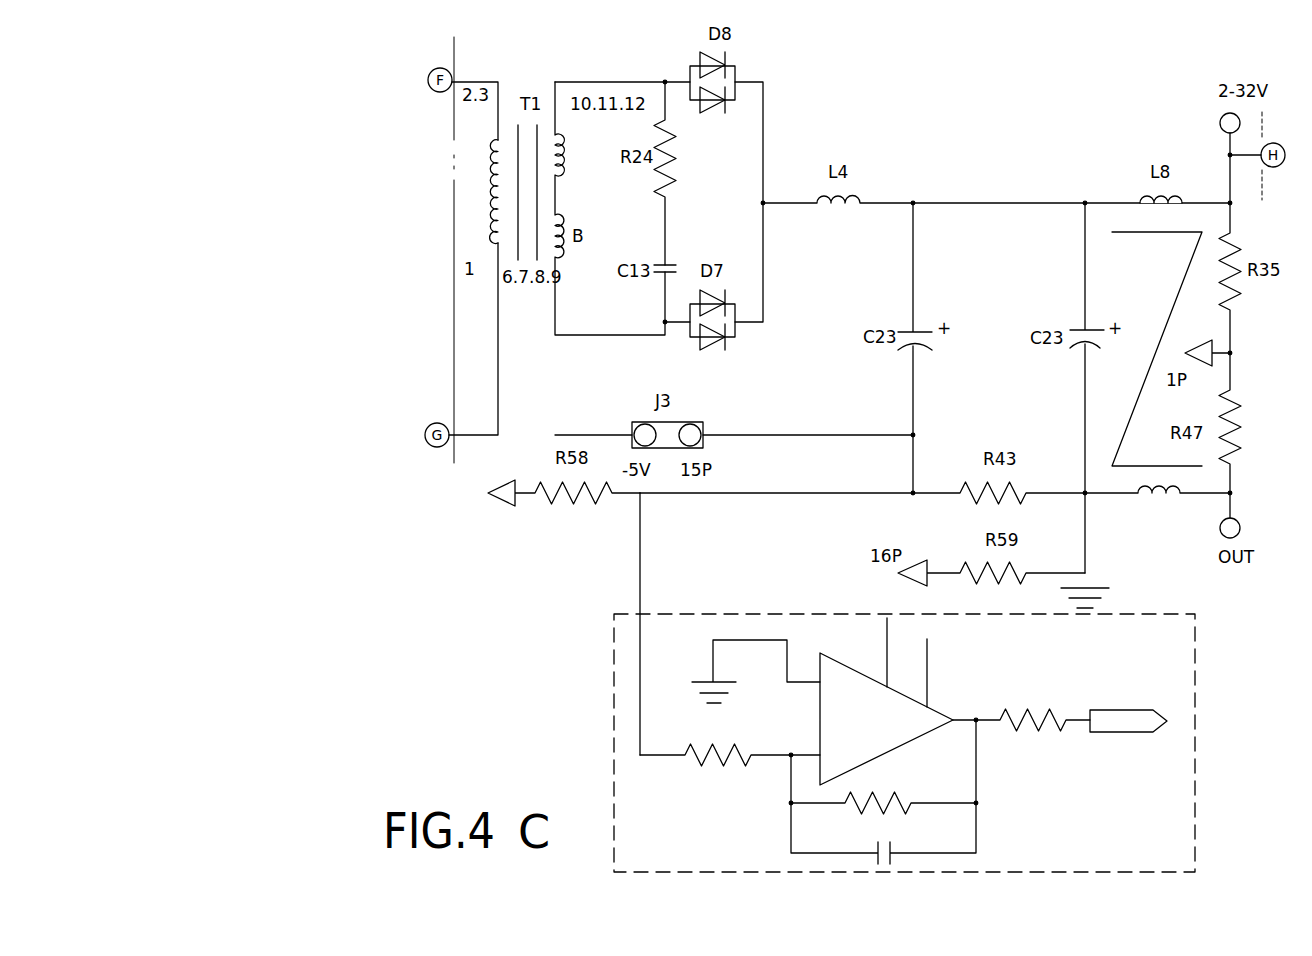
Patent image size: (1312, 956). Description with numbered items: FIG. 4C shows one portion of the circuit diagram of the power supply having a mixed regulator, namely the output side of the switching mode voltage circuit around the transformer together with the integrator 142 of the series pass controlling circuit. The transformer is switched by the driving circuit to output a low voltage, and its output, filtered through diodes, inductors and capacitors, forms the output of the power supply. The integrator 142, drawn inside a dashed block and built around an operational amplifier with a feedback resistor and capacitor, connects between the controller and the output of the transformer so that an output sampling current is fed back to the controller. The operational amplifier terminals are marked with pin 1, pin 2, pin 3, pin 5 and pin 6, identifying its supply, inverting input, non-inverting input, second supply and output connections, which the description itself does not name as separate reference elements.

The integrator 142 is at (952, 729).
The op-amp U2 pin 1 is at (873, 652).
The op-amp U2 inverting input pin 2 is at (730, 745).
The op-amp U2 non-inverting input pin 3 is at (756, 671).
The op-amp U2 pin 5 is at (913, 672).
The op-amp U2 output pin 6 is at (1021, 710).